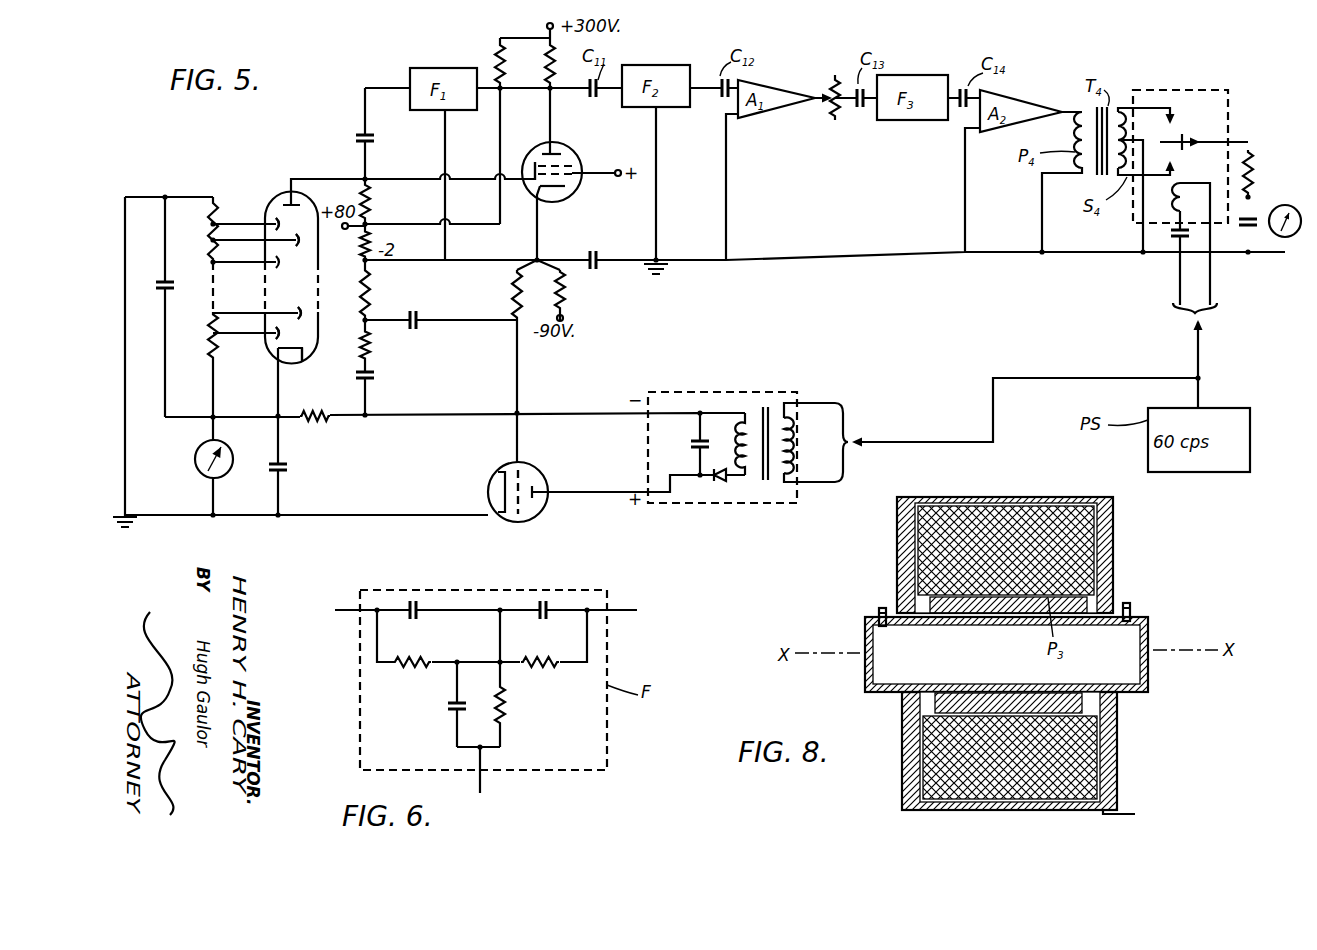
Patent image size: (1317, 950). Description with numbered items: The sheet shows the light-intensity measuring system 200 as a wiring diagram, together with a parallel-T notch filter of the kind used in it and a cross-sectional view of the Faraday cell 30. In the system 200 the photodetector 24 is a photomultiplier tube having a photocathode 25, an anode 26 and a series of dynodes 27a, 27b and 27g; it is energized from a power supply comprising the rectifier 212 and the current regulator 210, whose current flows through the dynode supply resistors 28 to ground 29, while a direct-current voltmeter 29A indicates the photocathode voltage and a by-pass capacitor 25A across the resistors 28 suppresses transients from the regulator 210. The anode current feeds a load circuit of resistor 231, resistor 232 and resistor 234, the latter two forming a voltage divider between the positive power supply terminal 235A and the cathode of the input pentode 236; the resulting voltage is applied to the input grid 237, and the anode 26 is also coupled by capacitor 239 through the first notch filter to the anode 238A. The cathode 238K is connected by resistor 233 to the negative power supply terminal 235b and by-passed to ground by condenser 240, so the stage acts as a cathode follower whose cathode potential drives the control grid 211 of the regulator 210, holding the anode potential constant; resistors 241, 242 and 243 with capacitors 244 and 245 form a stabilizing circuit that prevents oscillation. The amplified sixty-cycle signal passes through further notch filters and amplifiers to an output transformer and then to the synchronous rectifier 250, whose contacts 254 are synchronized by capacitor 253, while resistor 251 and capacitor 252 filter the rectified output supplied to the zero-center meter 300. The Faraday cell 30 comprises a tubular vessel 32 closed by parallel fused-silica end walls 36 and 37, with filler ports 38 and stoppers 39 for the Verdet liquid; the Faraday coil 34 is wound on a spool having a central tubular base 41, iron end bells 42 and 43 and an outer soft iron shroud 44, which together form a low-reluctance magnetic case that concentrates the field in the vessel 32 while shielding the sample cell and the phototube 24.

In FIG. 5, the light-intensity measuring system 200 is at (218, 150).
In FIG. 5, the photodetector 24 is at (319, 263).
In FIG. 5, the photocathode 25 is at (298, 364).
In FIG. 5, the by-pass capacitor 25A is at (296, 465).
In FIG. 5, the anode 26 is at (283, 188).
In FIG. 5, the dynode 27a is at (277, 338).
In FIG. 5, the dynode 27b is at (304, 314).
In FIG. 5, the dynode 27g is at (277, 213).
In FIG. 5, the dynode supply resistors 28 is at (212, 250).
In FIG. 5, the ground 29 is at (128, 516).
In FIG. 5, the direct-current voltmeter 29A is at (195, 456).
In FIG. 5, the current regulator 210 is at (567, 457).
In FIG. 5, the control grid 211 is at (538, 512).
In FIG. 5, the rectifier 212 is at (722, 392).
In FIG. 5, the resistor 231 is at (372, 208).
In FIG. 5, the resistor 232 is at (371, 244).
In FIG. 5, the resistor 233 is at (567, 296).
In FIG. 5, the resistor 234 is at (496, 60).
In FIG. 5, the positive power supply terminal 235A is at (546, 29).
In FIG. 5, the negative power supply terminal 235b is at (564, 318).
In FIG. 5, the input pentode 236 is at (533, 150).
In FIG. 5, the input grid 237 is at (572, 180).
In FIG. 5, the anode 238A is at (600, 137).
In FIG. 5, the cathode 238K is at (553, 192).
In FIG. 5, the blocking condenser 239 is at (408, 135).
In FIG. 5, the by-pass condenser 240 is at (600, 255).
In FIG. 5, the resistor 241 is at (510, 290).
In FIG. 5, the resistor 242 is at (372, 304).
In FIG. 5, the resistor 243 is at (373, 343).
In FIG. 5, the capacitor 244 is at (420, 320).
In FIG. 5, the capacitor 245 is at (377, 378).
In FIG. 5, the synchronous rectifier 250 is at (1177, 90).
In FIG. 5, the resistor 251 is at (1273, 129).
In FIG. 5, the capacitor 252 is at (1247, 243).
In FIG. 5, the capacitor 253 is at (1178, 243).
In FIG. 5, the rectifier contacts 254 is at (1172, 113).
In FIG. 5, the meter 300 is at (1293, 238).
In FIG. 8, the vibrator assembly 30 is at (1166, 735).
In FIG. 8, the vessel 32 is at (1120, 635).
In FIG. 8, the Faraday coil 34 is at (915, 537).
In FIG. 8, the end wall 36 is at (868, 685).
In FIG. 8, the end wall 37 is at (1147, 668).
In FIG. 8, the filler ports 38 is at (1131, 612).
In FIG. 8, the stoppers 39 is at (883, 612).
In FIG. 8, the central tubular base 41 is at (1000, 600).
In FIG. 8, the end bell 42 is at (905, 800).
In FIG. 8, the end bell 43 is at (1113, 535).
In FIG. 8, the outer cylindrical soft iron shroud 44 is at (1132, 809).